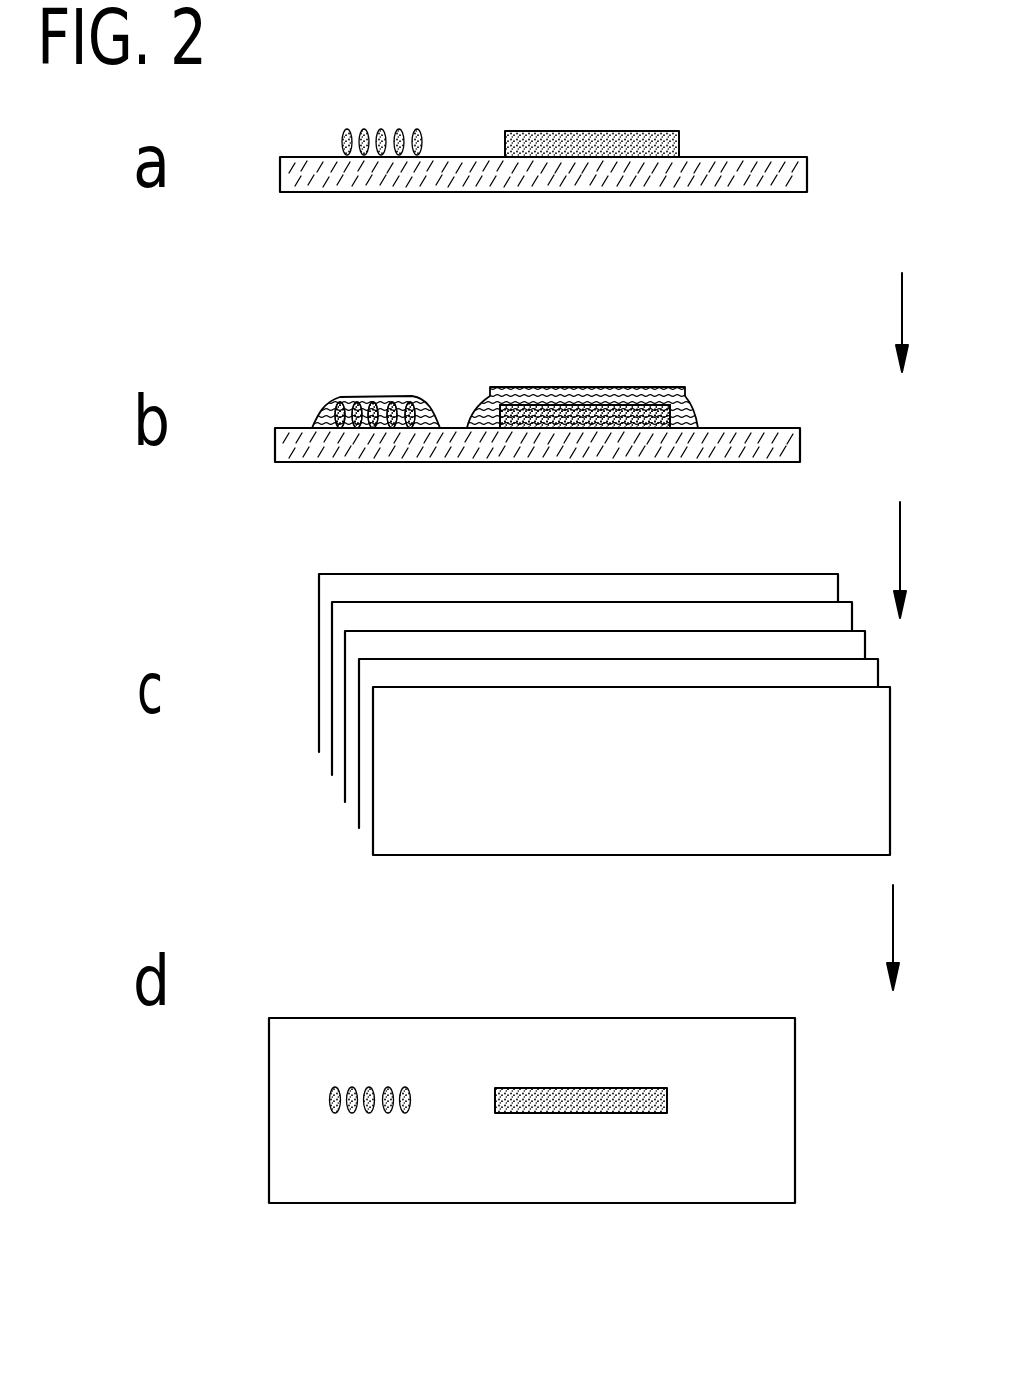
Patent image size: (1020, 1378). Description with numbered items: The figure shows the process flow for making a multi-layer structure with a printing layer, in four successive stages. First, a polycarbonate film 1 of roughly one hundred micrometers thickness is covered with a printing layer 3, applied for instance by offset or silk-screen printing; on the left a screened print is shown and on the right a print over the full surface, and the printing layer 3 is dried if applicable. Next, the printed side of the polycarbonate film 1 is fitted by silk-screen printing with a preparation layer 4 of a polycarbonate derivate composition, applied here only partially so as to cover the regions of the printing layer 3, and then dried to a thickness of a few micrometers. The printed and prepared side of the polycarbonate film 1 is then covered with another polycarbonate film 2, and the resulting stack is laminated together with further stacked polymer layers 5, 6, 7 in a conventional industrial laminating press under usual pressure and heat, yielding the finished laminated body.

The polycarbonate film 1 is at (768, 183).
The polycarbonate film 2 is at (372, 672).
The printing layer 3 is at (533, 142).
The preparation layer 4 is at (368, 393).
The polymer layer 5 is at (330, 587).
The polymer layer 6 is at (345, 615).
The polymer layer 7 is at (404, 838).